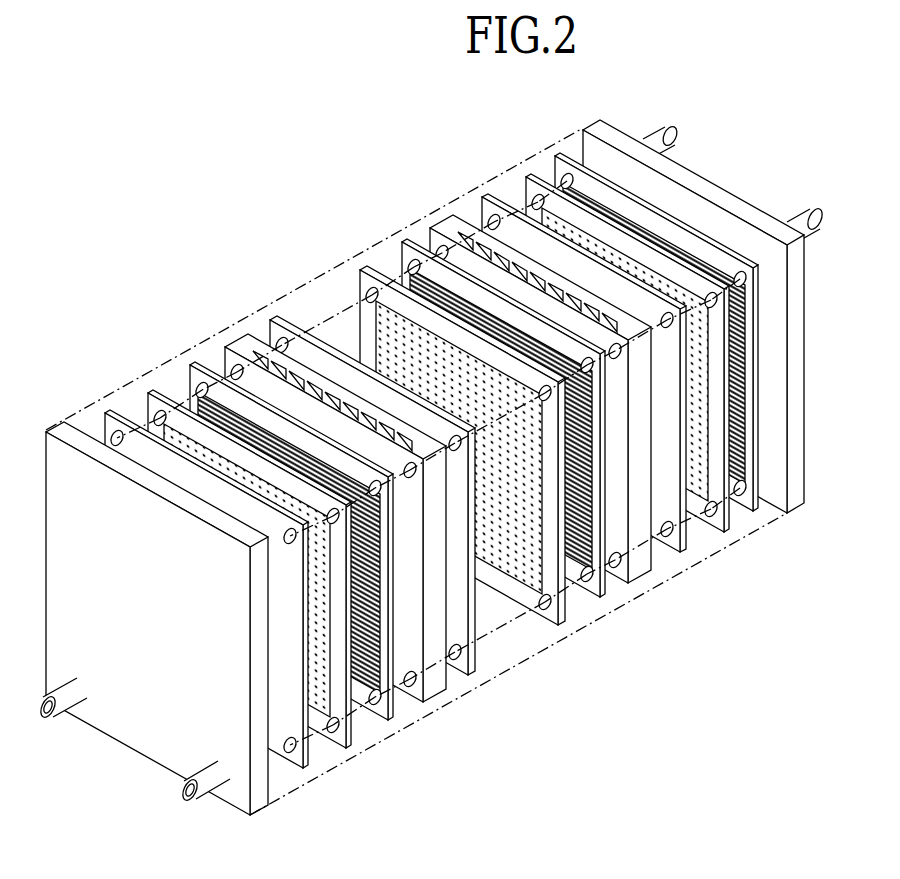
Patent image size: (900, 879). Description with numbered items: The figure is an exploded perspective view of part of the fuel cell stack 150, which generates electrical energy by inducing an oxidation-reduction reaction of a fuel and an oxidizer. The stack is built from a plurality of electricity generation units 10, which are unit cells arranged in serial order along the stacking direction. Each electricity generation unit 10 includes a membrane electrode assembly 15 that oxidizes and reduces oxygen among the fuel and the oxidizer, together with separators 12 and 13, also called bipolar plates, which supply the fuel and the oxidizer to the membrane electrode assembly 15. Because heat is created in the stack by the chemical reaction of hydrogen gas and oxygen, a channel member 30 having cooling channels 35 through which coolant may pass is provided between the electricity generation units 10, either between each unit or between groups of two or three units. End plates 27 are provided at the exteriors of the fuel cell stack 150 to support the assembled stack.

The fuel cell stack 150 is at (291, 249).
The end plate 27 is at (803, 372).
The electricity generation unit 10 is at (478, 776).
The separator 13 is at (307, 752).
The membrane electrode assembly 15 is at (352, 725).
The separator 12 is at (395, 703).
The channel member 30 is at (431, 682).
The cooling channel 35 is at (270, 350).